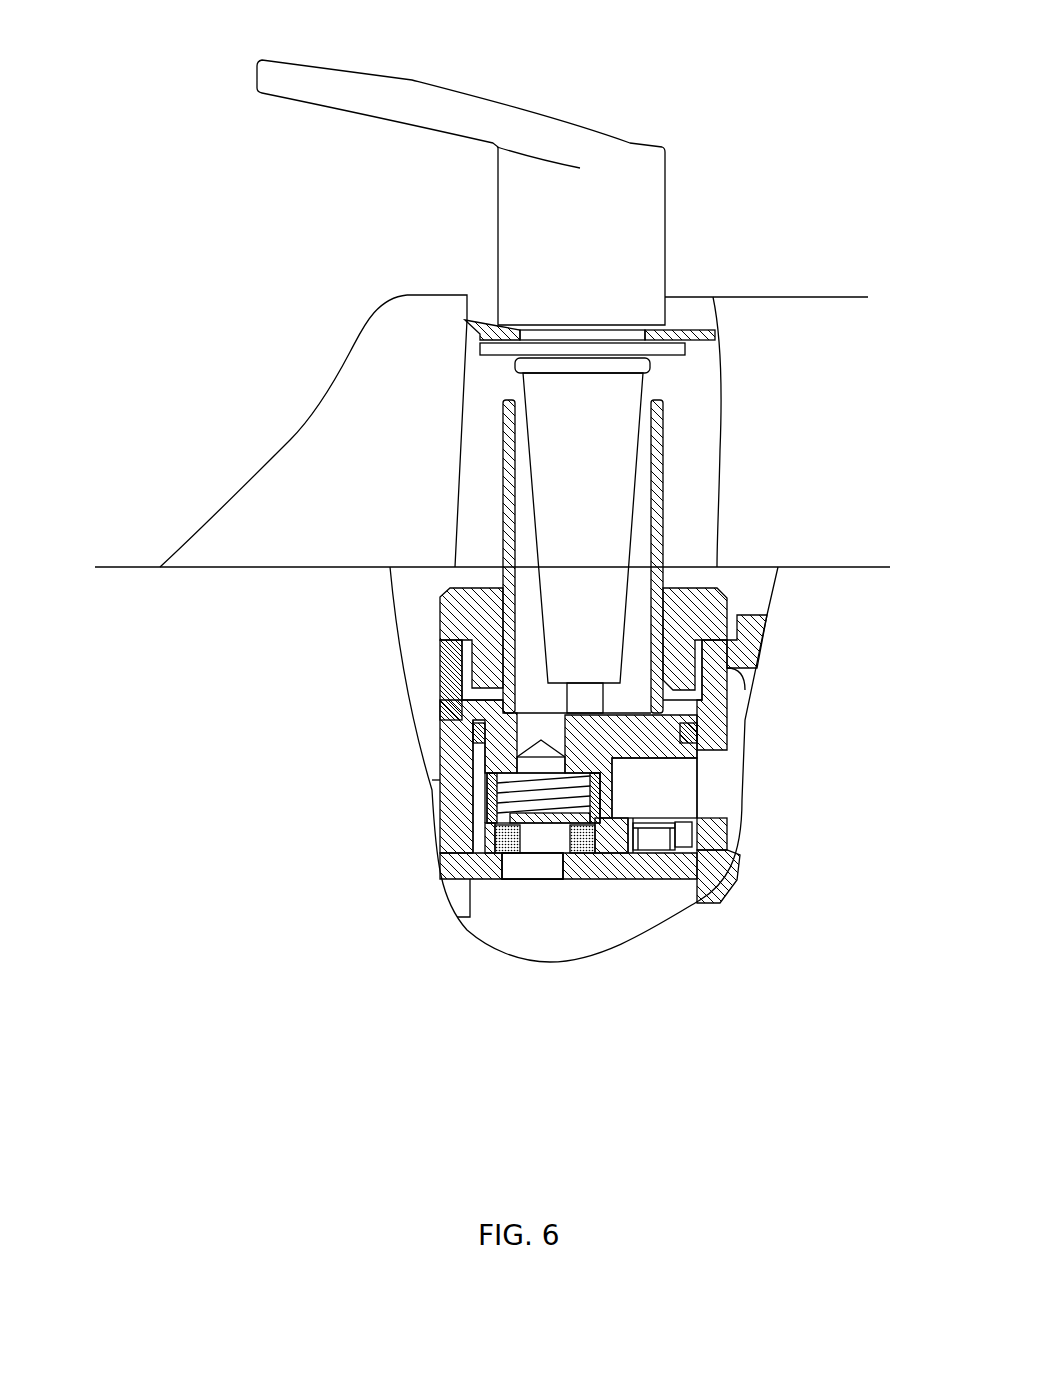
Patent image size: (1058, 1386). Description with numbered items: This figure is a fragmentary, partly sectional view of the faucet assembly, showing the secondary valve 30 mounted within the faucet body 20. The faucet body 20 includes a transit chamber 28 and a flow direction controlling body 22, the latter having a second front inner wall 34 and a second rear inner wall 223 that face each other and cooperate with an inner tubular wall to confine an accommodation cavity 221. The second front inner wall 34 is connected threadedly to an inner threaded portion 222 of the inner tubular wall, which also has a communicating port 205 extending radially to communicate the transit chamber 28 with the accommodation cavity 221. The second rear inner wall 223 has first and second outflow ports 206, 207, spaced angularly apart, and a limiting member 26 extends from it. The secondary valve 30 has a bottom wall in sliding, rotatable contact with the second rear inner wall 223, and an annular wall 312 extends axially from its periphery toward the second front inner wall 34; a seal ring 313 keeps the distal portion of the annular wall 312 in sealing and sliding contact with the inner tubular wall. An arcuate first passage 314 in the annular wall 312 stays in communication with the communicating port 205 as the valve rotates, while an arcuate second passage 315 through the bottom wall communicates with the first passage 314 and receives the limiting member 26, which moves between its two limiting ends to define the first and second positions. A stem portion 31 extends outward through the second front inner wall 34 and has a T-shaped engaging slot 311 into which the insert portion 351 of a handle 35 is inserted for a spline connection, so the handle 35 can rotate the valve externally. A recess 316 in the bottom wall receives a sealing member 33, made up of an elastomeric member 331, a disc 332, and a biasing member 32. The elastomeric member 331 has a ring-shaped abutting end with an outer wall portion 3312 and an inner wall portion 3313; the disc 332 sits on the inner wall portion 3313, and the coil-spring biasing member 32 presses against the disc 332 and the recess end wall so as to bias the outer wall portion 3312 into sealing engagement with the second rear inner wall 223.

The faucet body 20 is at (752, 598).
The flow direction controlling body 22 is at (455, 705).
The limiting member 26 is at (663, 837).
The transit chamber 28 is at (748, 677).
The secondary valve 30 is at (676, 460).
The stem portion 31 is at (507, 460).
The biasing member 32 is at (515, 760).
The sealing member 33 is at (292, 770).
The second front inner wall 34 is at (453, 613).
The handle 35 is at (640, 223).
The communicating port 205 is at (718, 782).
The first outflow port 206 is at (528, 873).
The second outflow port 207 is at (532, 866).
The accommodation cavity 221 is at (475, 752).
The inner threaded portion 222 is at (452, 655).
The second rear inner wall 223 is at (705, 865).
The T-shaped engaging slot 311 is at (525, 530).
The annular wall 312 is at (678, 778).
The seal ring 313 is at (699, 722).
The first passage 314 is at (715, 782).
The second passage 315 is at (717, 815).
The recess 316 is at (622, 827).
The elastomeric member 331 is at (443, 853).
The disc 332 is at (487, 837).
The insert portion 351 is at (602, 395).
The outer wall portion 3312 is at (587, 833).
The inner wall portion 3313 is at (558, 825).